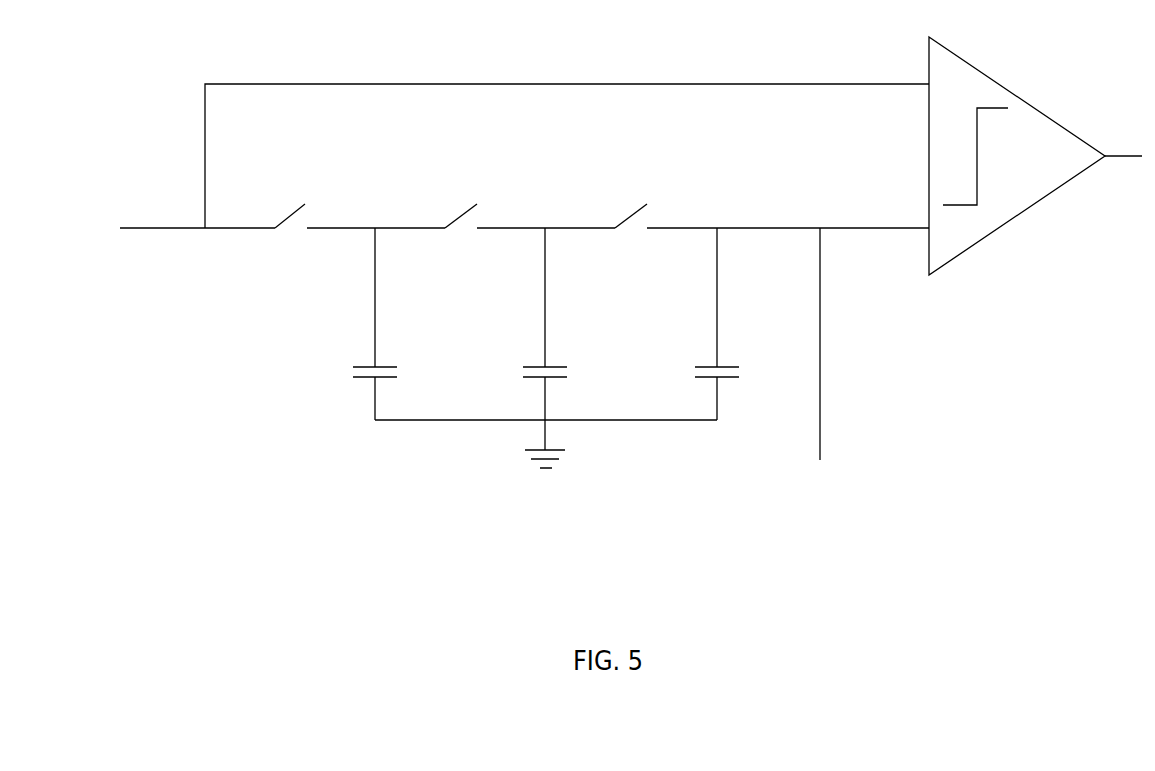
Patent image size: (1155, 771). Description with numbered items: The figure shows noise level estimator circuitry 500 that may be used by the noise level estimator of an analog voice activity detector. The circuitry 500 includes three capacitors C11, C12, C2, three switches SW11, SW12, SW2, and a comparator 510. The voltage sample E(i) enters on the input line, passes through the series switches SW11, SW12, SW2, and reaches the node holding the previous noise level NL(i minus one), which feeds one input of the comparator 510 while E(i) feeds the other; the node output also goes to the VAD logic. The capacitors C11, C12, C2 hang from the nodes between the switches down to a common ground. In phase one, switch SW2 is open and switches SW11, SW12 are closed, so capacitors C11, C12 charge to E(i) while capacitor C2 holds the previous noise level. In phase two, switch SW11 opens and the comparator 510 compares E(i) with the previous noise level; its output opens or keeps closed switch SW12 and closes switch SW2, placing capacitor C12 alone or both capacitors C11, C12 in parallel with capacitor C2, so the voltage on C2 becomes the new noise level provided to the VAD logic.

The noise level estimator circuitry 500 is at (602, 307).
The comparator 510 is at (1035, 156).
The switch SW11 is at (290, 239).
The switch SW12 is at (460, 239).
The switch SW2 is at (631, 239).
The capacitor C11 is at (337, 324).
The capacitor C12 is at (506, 339).
The capacitor C2 is at (688, 324).